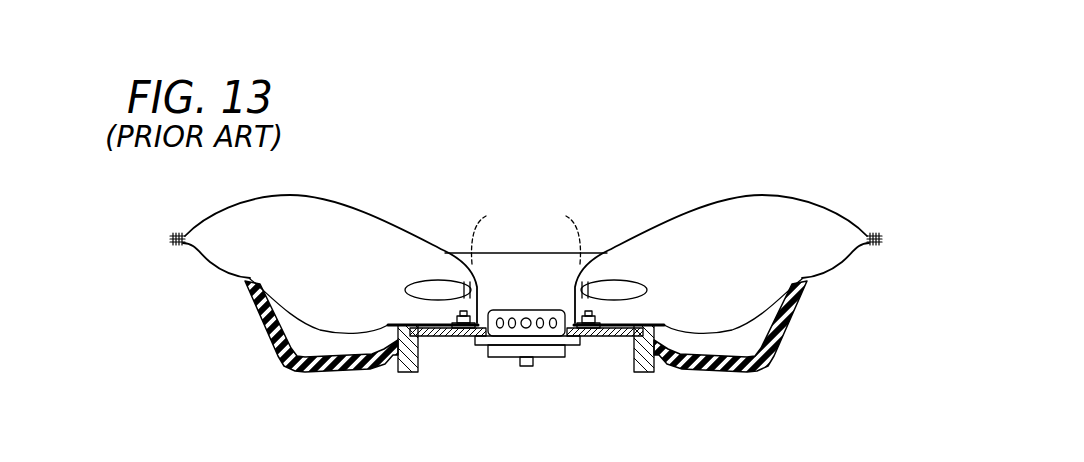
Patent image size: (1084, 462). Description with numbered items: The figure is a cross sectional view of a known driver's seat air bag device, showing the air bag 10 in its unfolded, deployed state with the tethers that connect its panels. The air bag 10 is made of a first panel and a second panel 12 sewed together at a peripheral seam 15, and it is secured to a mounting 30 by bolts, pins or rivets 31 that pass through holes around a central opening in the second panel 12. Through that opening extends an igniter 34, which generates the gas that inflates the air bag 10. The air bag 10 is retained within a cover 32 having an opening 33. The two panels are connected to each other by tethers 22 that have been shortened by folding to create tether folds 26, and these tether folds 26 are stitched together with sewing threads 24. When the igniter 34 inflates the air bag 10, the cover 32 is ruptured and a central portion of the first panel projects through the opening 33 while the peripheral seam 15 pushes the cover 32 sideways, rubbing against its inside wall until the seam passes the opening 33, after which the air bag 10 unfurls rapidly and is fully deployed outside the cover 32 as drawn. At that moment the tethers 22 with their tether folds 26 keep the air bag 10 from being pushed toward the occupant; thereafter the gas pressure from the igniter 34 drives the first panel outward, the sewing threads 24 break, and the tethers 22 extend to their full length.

The air bag 10 is at (353, 209).
The second panel 12 is at (238, 280).
The peripheral seam 15 is at (172, 237).
The tethers 22 is at (407, 274).
The sewing threads 24 is at (526, 236).
The tether folds 26 is at (432, 280).
The mounting 30 is at (451, 338).
The bolts, pins or rivets 31 is at (458, 336).
The cover 32 is at (777, 332).
The opening 33 is at (248, 283).
The igniter 34 is at (552, 362).